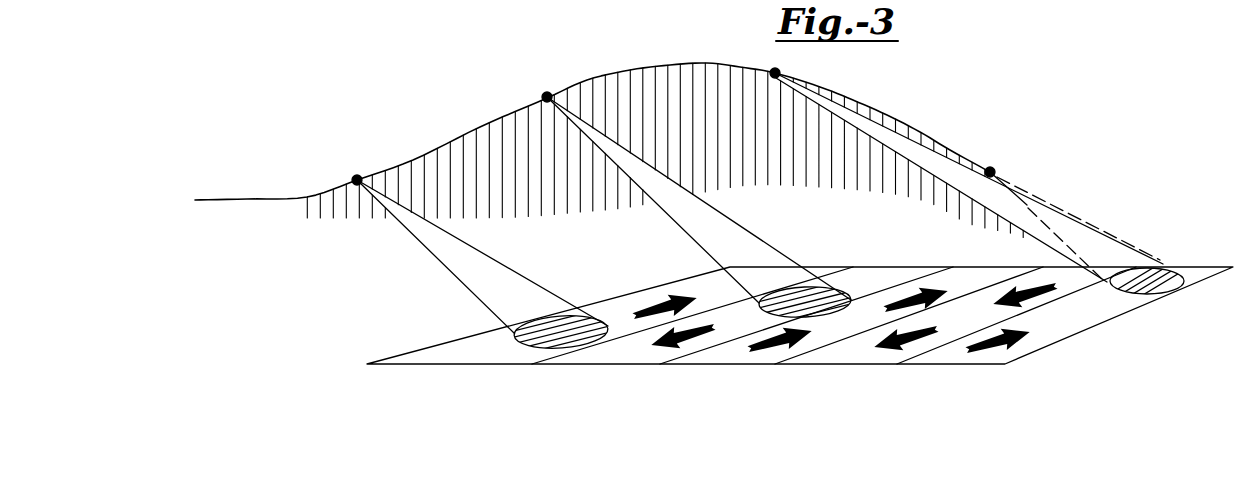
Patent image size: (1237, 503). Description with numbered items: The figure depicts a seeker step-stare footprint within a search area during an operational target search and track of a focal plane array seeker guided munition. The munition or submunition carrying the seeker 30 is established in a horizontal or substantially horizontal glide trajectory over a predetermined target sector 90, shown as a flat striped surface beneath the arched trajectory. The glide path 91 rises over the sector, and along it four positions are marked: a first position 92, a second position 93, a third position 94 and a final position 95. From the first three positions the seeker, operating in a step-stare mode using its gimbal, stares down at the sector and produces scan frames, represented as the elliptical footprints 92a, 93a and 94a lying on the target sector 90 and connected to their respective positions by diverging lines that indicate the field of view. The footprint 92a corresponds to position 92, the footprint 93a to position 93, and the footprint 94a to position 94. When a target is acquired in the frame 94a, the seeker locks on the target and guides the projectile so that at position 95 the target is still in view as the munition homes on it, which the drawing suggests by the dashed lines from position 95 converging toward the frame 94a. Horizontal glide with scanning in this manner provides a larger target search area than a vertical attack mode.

The electromagnetic wave source 30 is at (436, 0).
The predetermined target sector 90 is at (418, 337).
The glide path 91 is at (210, 199).
The scan frame position 92 is at (357, 178).
The scan frame position 93 is at (547, 95).
The scan frame position 94 is at (775, 70).
The scan frame position 95 is at (991, 170).
The scan frame 92a is at (545, 330).
The scan frame 93a is at (806, 300).
The scan frame 94a is at (1147, 282).